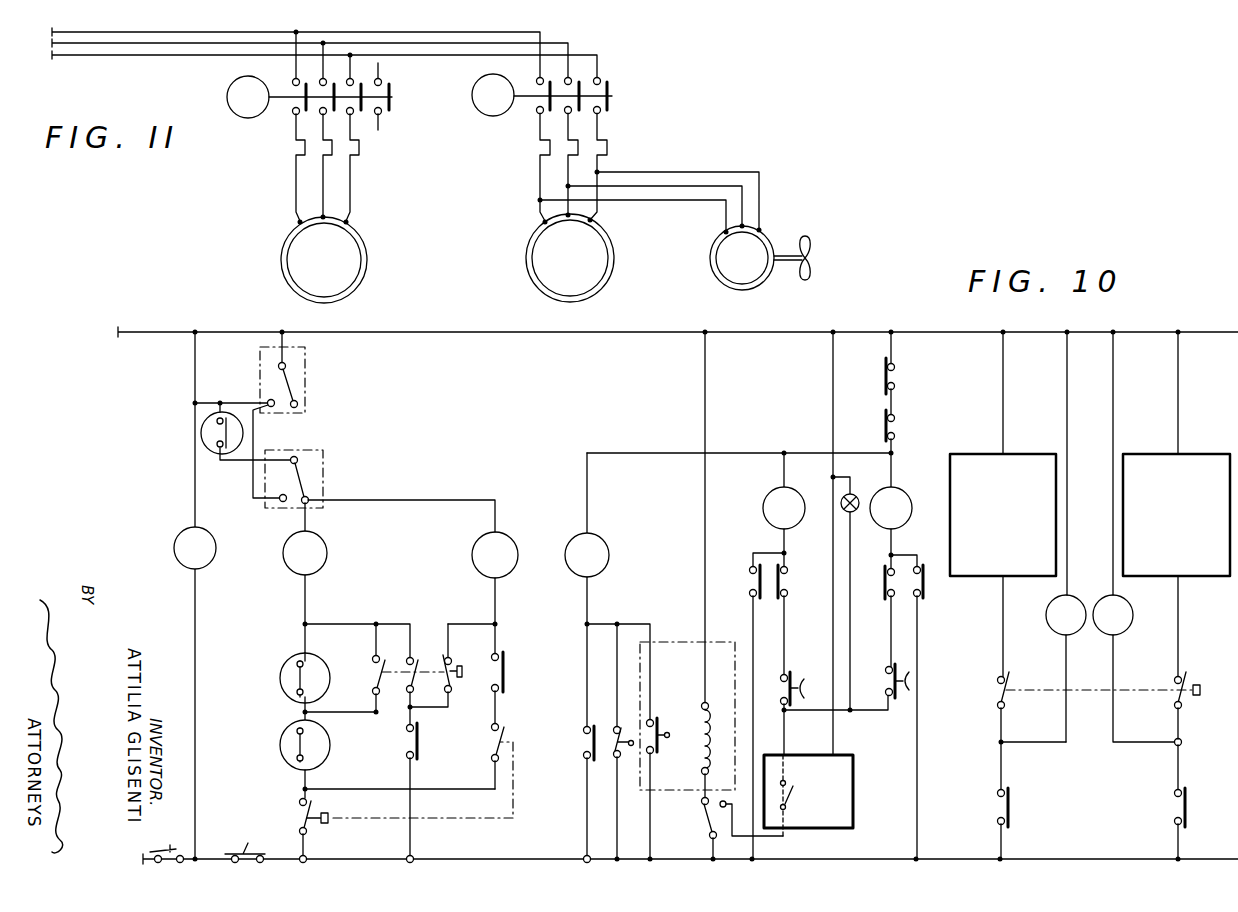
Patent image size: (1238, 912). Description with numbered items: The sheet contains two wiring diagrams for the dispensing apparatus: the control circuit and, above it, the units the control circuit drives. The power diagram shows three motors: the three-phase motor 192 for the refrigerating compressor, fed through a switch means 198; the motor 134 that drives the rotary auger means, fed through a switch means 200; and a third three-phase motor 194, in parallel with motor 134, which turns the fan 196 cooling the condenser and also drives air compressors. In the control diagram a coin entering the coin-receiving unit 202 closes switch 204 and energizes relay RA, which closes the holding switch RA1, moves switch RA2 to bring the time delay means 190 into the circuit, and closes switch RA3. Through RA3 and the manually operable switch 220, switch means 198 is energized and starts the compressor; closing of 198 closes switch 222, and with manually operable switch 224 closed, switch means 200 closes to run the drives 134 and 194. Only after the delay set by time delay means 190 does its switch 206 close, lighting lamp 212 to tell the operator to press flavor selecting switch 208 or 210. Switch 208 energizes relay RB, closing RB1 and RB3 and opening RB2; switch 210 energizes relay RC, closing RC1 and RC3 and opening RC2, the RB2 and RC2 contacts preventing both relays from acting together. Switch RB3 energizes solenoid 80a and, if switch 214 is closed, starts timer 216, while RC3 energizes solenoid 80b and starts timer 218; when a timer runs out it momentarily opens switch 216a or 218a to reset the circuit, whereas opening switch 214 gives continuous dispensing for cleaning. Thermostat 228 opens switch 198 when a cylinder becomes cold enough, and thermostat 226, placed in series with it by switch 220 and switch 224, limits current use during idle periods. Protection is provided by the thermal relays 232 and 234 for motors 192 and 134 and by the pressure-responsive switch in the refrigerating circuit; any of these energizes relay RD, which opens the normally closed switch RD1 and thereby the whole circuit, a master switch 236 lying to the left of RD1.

In FIG. 10, the solenoid 80a is at (1057, 625).
In FIG. 10, the solenoid 80b is at (1104, 625).
In FIG. 11, the motor 134 is at (543, 257).
In FIG. 10, the time delay means 190 is at (853, 795).
In FIG. 11, the three-phase motor 192 is at (293, 266).
In FIG. 11, the three-phase motor 194 is at (722, 264).
In FIG. 11, the fan 196 is at (809, 246).
In FIG. 11, the switch means 198 is at (274, 112).
In FIG. 10, the switch means 198 is at (291, 565).
In FIG. 11, the switch means 200 is at (516, 110).
In FIG. 10, the switch means 200 is at (481, 567).
In FIG. 10, the coin-receiving unit 202 is at (684, 645).
In FIG. 10, the switch 204 is at (664, 733).
In FIG. 10, the switch 206 is at (807, 795).
In FIG. 10, the selecting switch 208 is at (793, 678).
In FIG. 10, the selecting switch 210 is at (908, 696).
In FIG. 10, the lamp 212 is at (866, 480).
In FIG. 10, the switch 214 is at (1096, 692).
In FIG. 10, the timer 216 is at (988, 510).
In FIG. 10, the switch 216a is at (894, 378).
In FIG. 10, the timer 218 is at (1162, 527).
In FIG. 10, the switch 218a is at (894, 427).
In FIG. 10, the manually operable switch 220 is at (458, 671).
In FIG. 11, the switch 222 is at (388, 74).
In FIG. 10, the switch 222 is at (506, 672).
In FIG. 10, the manually operable switch 224 is at (452, 820).
In FIG. 10, the thermostat 226 is at (281, 690).
In FIG. 10, the thermostat 228 is at (282, 749).
In FIG. 10, the thermal relay 232 is at (308, 388).
In FIG. 10, the thermal relay 234 is at (323, 461).
In FIG. 10, the master switch 236 is at (171, 841).
In FIG. 10, the relay RA is at (587, 515).
In FIG. 10, the relay RB is at (784, 491).
In FIG. 10, the relay RC is at (891, 508).
In FIG. 10, the relay RD is at (195, 595).
In FIG. 10, the normally open switch RA1 is at (590, 742).
In FIG. 10, the switch RA2 is at (723, 829).
In FIG. 10, the normally open switch RA3 is at (434, 741).
In FIG. 10, the normally open switch RB1 is at (756, 584).
In FIG. 10, the normally closed switch RB2 is at (873, 582).
In FIG. 10, the normally open switch RB3 is at (1026, 807).
In FIG. 10, the switch RC1 is at (937, 581).
In FIG. 10, the switch RC2 is at (802, 581).
In FIG. 10, the normally open switch RC3 is at (1203, 807).
In FIG. 10, the normally closed switch RD1 is at (251, 841).